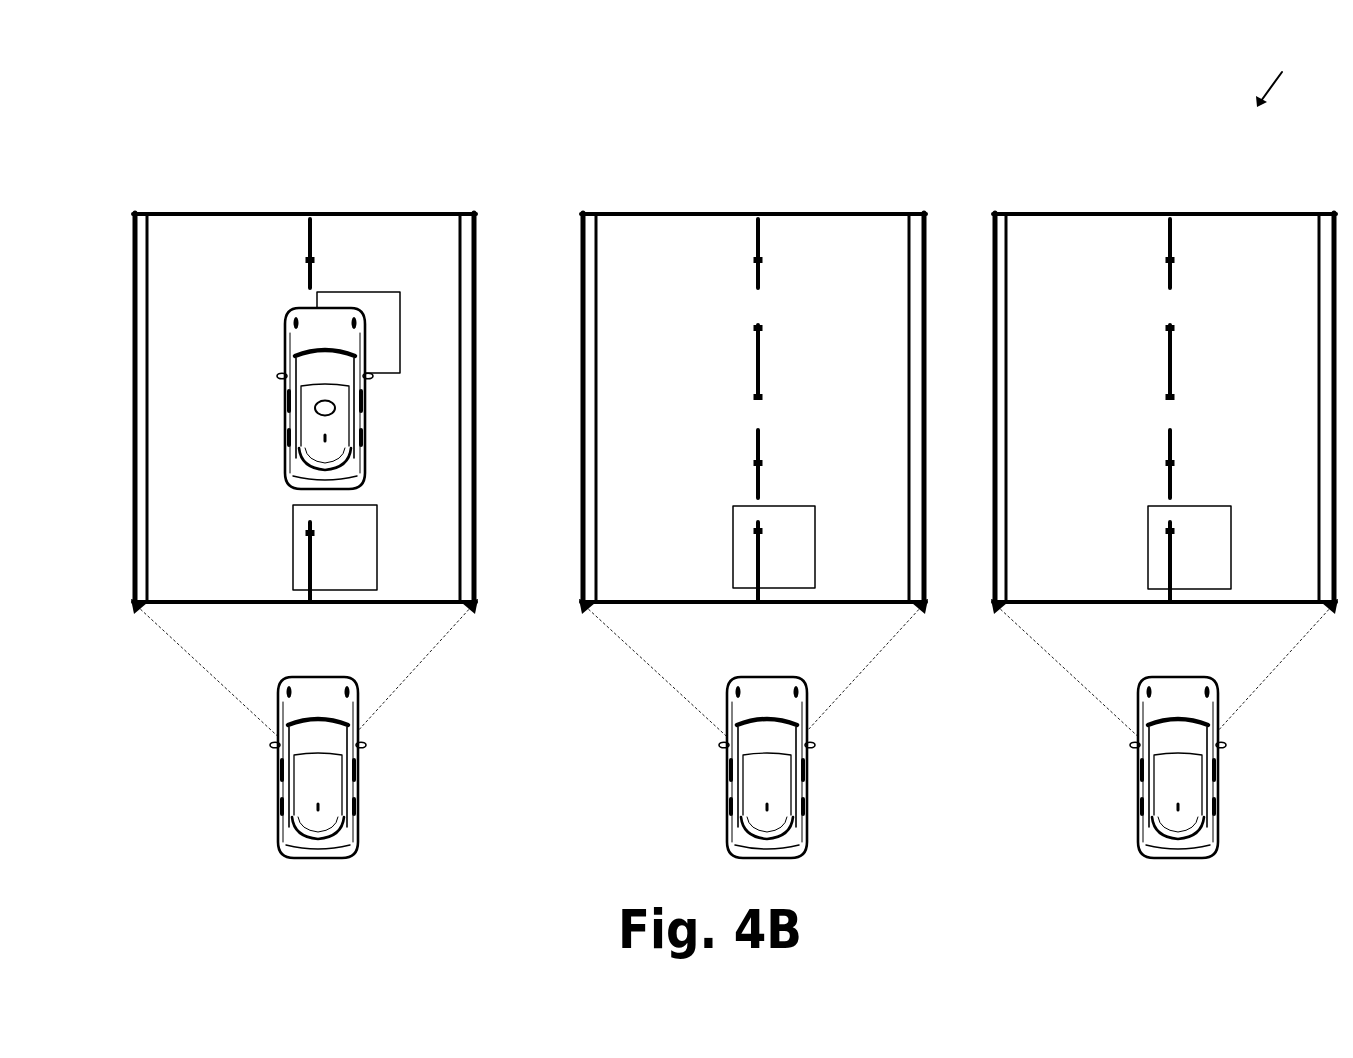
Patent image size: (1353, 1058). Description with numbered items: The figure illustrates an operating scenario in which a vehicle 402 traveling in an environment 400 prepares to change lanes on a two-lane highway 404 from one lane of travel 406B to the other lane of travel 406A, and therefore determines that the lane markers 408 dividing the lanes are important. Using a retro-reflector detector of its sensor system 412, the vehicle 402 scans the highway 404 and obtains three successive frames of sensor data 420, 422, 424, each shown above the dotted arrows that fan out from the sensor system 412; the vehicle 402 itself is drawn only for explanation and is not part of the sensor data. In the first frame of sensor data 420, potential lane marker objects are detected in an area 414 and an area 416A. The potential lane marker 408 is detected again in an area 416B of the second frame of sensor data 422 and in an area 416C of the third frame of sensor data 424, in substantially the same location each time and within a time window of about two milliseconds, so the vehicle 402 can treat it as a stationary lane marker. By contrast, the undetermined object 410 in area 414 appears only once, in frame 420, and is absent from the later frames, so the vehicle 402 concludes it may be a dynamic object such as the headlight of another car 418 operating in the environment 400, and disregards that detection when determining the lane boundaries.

The environment 400 is at (1284, 75).
The vehicle 402 is at (304, 695).
The two-lane highway 404 is at (136, 214).
The lane of travel 406A is at (181, 238).
The lane of travel 406B is at (437, 238).
The lane markers 408 is at (310, 533).
The undetermined object 410 is at (334, 307).
The sensor system 412 is at (328, 777).
The area 414 is at (400, 328).
The area 416A is at (378, 556).
The area 416B is at (817, 553).
The area 416C is at (1229, 553).
The another car 418 is at (362, 418).
The frame of sensor data 420 is at (402, 214).
The frame of sensor data 422 is at (850, 214).
The frame of sensor data 424 is at (1262, 214).